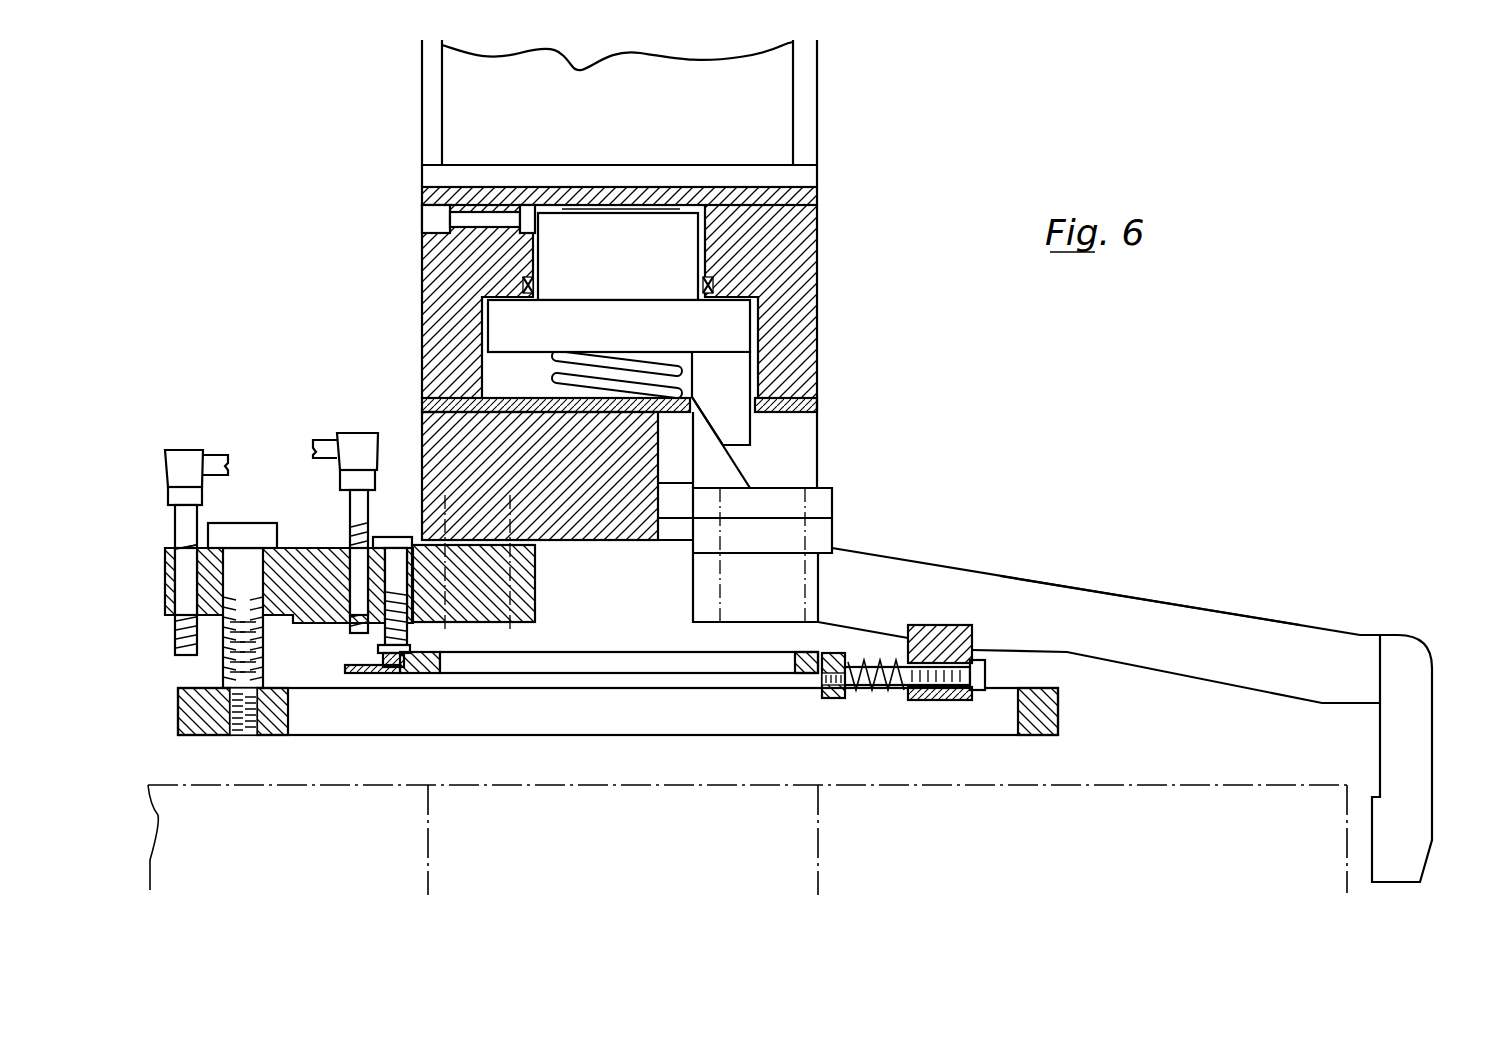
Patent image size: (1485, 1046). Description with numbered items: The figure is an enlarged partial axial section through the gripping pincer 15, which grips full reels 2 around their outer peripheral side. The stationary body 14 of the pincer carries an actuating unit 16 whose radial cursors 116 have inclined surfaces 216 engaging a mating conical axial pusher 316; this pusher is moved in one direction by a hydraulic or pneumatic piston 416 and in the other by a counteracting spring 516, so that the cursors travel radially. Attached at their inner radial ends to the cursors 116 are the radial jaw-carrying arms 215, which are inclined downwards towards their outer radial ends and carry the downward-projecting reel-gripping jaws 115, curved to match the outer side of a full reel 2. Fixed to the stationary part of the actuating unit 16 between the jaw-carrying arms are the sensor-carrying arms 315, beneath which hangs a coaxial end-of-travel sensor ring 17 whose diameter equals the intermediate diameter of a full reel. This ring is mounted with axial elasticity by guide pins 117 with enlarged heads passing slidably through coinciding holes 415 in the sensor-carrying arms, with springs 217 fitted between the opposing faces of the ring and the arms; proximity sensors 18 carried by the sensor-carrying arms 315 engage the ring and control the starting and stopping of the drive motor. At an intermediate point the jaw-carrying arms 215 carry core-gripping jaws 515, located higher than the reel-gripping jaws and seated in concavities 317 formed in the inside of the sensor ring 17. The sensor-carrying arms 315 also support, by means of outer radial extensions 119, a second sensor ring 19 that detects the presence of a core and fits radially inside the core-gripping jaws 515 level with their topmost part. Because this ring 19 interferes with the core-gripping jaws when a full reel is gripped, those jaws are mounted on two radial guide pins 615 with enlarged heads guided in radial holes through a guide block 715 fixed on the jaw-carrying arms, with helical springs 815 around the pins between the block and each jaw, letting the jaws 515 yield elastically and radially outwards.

The spindle column 14 is at (808, 92).
The actuating unit 16 is at (822, 366).
The counteracting spring 516 is at (598, 356).
The hydraulic or pneumatic piston 416 is at (737, 325).
The conical axial pusher 316 is at (737, 382).
The inclined surfaces 216 is at (748, 470).
The radial cursors 116 is at (836, 516).
The gripping pincer 15 is at (1078, 580).
The jaw-carrying arms 215 is at (1137, 607).
The reel-gripping jaws 115 is at (1422, 748).
The proximity sensors 18 is at (178, 517).
The sensor-carrying arms 315 is at (312, 552).
The holes 415 is at (252, 548).
The guide pins 117 is at (225, 650).
The springs 217 is at (225, 672).
The outer radial extensions 119 is at (423, 675).
The sensor ring 19 is at (590, 652).
The sensor ring 17 is at (698, 722).
The concavities 317 is at (1018, 706).
The core-gripping jaws 515 is at (833, 700).
The radial guide pins 615 is at (884, 690).
The springs 815 is at (866, 670).
The guide block 715 is at (932, 632).
The full reel 2 is at (1187, 797).